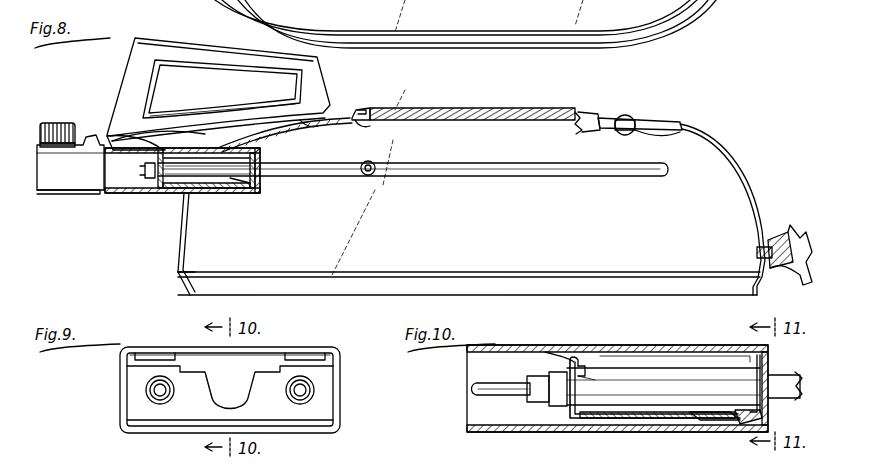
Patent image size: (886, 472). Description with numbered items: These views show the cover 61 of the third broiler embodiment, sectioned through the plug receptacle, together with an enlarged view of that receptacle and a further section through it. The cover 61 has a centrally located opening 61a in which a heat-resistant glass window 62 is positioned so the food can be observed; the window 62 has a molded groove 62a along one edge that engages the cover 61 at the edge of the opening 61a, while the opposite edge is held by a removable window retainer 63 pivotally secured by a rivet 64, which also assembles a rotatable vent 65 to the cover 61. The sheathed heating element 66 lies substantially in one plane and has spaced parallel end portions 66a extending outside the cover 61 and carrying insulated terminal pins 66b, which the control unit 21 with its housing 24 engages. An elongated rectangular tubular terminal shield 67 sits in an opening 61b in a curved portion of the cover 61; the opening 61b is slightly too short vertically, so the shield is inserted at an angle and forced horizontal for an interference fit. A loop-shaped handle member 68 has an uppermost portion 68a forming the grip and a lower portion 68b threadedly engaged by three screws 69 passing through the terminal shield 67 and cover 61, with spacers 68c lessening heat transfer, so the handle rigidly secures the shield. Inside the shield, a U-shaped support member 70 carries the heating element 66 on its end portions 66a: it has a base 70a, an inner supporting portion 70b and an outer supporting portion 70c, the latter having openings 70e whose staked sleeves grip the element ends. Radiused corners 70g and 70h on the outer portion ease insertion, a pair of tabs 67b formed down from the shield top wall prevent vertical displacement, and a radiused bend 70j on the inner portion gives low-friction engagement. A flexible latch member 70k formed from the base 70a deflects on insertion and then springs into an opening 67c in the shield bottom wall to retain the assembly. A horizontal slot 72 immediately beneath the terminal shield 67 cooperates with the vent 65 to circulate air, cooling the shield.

In FIG. 8, the control unit 21 is at (52, 180).
In FIG. 8, the housing 24 is at (55, 126).
In FIG. 8, the cover 61 is at (724, 142).
In FIG. 8, the opening 61a is at (352, 110).
In FIG. 8, the opening 61b is at (246, 150).
In FIG. 8, the window 62 is at (446, 108).
In FIG. 8, the groove 62a is at (357, 122).
In FIG. 8, the window retainer 63 is at (576, 130).
In FIG. 8, the rivet 64 is at (624, 117).
In FIG. 8, the vent 65 is at (655, 120).
In FIG. 8, the heating element 66 is at (447, 172).
In FIG. 10, the heating element 66 is at (672, 386).
In FIG. 8, the end portions 66a is at (210, 176).
In FIG. 10, the end portions 66a is at (628, 360).
In FIG. 9, the terminal pins 66b is at (160, 390).
In FIG. 10, the terminal pins 66b is at (486, 394).
In FIG. 8, the terminal shield 67 is at (118, 194).
In FIG. 9, the terminal shield 67 is at (122, 376).
In FIG. 10, the terminal shield 67 is at (468, 364).
In FIG. 8, the tabs 67b is at (164, 148).
In FIG. 9, the tabs 67b is at (153, 356).
In FIG. 10, the tabs 67b is at (558, 360).
In FIG. 10, the opening 67c is at (672, 432).
In FIG. 8, the handle member 68 is at (174, 52).
In FIG. 8, the uppermost portion 68a is at (233, 56).
In FIG. 8, the lower portion 68b is at (238, 118).
In FIG. 8, the spacers 68c is at (106, 131).
In FIG. 8, the screws 69 is at (150, 163).
In FIG. 8, the support member 70 is at (180, 190).
In FIG. 9, the support member 70 is at (264, 386).
In FIG. 10, the support member 70 is at (757, 362).
In FIG. 10, the base 70a is at (636, 420).
In FIG. 10, the inner supporting portion 70b is at (764, 360).
In FIG. 9, the outer supporting portion 70c is at (196, 395).
In FIG. 10, the outer supporting portion 70c is at (580, 380).
In FIG. 9, the openings 70e is at (172, 400).
In FIG. 10, the radiused corners 70g is at (571, 418).
In FIG. 10, the radiused corners 70h is at (584, 358).
In FIG. 10, the radiused bend 70j is at (762, 418).
In FIG. 10, the latch member 70k is at (716, 422).
In FIG. 8, the slot 72 is at (186, 224).